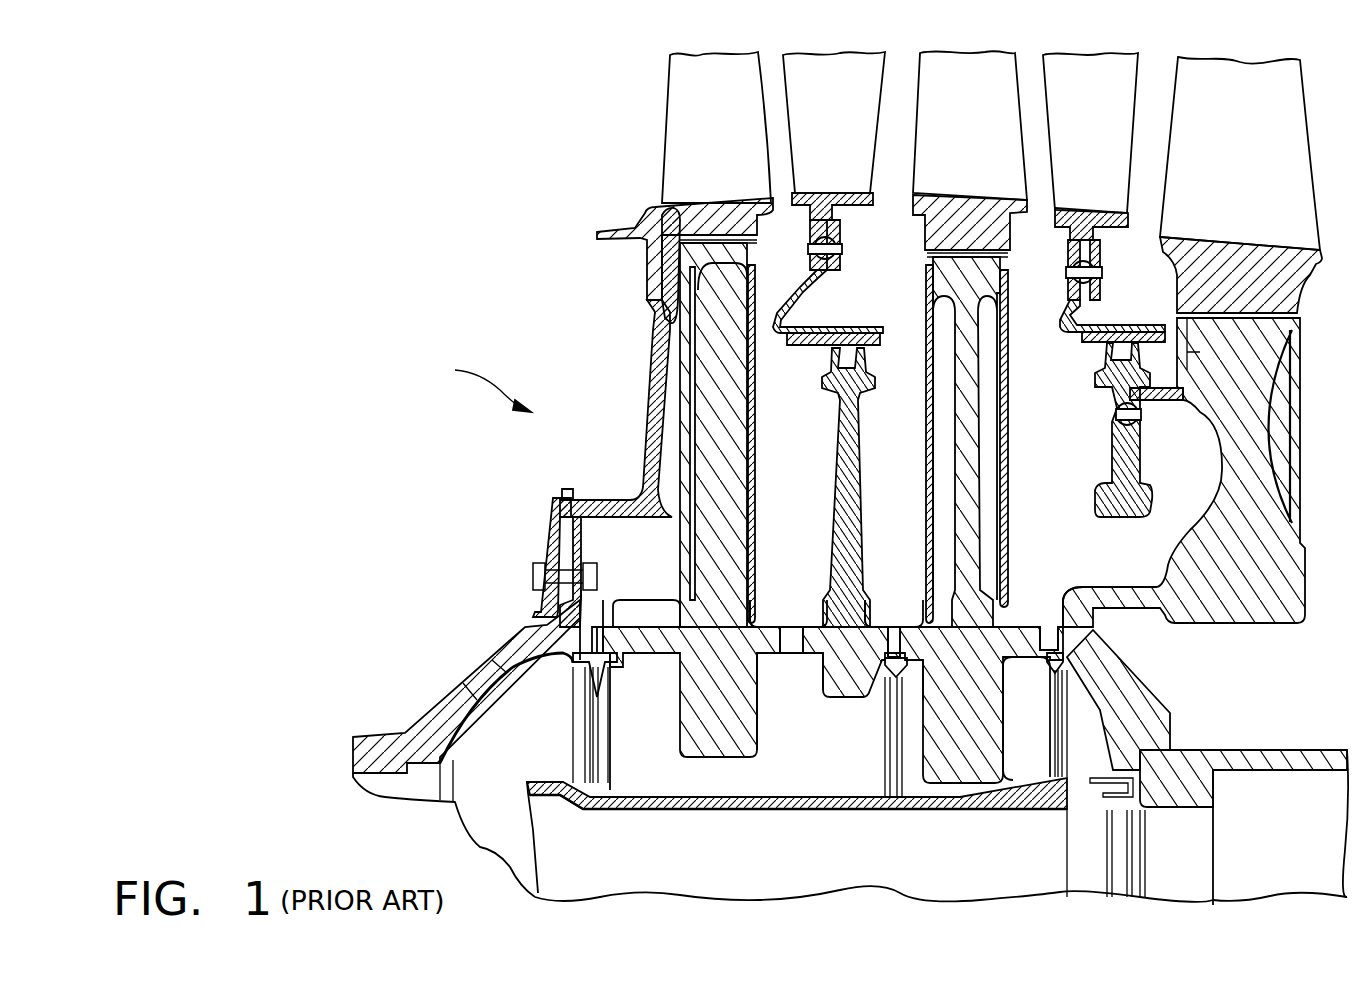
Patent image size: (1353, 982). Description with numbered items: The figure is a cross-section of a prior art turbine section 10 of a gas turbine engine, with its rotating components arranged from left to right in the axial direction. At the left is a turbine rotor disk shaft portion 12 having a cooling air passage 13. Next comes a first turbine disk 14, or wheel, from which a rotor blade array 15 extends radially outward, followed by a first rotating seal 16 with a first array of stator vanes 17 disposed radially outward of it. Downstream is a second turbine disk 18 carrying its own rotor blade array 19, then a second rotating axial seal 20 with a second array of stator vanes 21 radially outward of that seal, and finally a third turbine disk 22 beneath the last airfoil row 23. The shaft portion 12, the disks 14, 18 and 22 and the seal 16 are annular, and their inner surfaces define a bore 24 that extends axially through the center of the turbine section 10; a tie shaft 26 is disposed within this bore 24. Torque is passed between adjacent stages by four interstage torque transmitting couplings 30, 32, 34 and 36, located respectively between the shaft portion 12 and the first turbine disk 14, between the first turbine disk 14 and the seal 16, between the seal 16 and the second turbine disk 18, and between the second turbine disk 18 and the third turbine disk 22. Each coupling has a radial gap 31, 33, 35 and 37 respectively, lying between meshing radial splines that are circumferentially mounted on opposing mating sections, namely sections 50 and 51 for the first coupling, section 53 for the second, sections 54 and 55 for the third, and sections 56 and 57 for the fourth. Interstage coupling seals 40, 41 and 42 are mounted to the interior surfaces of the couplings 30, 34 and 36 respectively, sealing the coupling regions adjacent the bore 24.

The turbine section 10 is at (475, 385).
The turbine rotor disk shaft portion 12 is at (506, 650).
The cooling air passage 13 is at (477, 690).
The first turbine disk 14 is at (707, 397).
The rotor blade array 15 is at (726, 137).
The first rotating seal 16 is at (848, 447).
The first array of stator vanes 17 is at (843, 127).
The second turbine disk 18 is at (968, 397).
The rotor blade array 19 is at (973, 137).
The second rotating axial seal 20 is at (1138, 498).
The second array of stator vanes 21 is at (1105, 145).
The third turbine disk 22 is at (1247, 427).
The fifth stage blade airfoil 23 is at (1252, 162).
The bore 24 is at (519, 771).
The tie shaft 26 is at (937, 827).
The interstage torque transmitting coupling 30 is at (623, 622).
The radial gap 31 is at (593, 627).
The interstage torque transmitting coupling 32 is at (815, 625).
The radial gap 33 is at (797, 625).
The interstage torque transmitting coupling 34 is at (913, 613).
The radial gap 35 is at (913, 628).
The interstage torque transmitting coupling 36 is at (1063, 620).
The radial gap 37 is at (1050, 627).
The interstage coupling seal 40 is at (603, 703).
The interstage coupling seal 41 is at (880, 753).
The interstage coupling seal 42 is at (1065, 743).
The mating section 50 is at (563, 657).
The mating section 51 is at (620, 663).
The mating section 53 is at (813, 697).
The mating section 54 is at (877, 697).
The mating section 55 is at (780, 667).
The mating section 56 is at (1013, 663).
The mating section 57 is at (1068, 652).